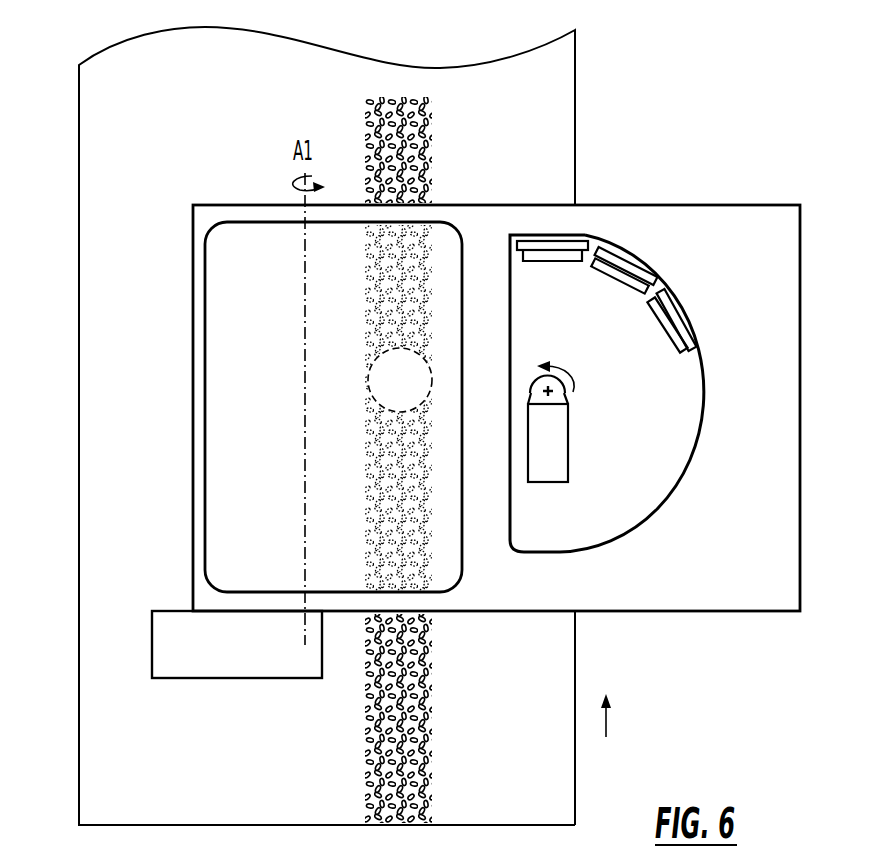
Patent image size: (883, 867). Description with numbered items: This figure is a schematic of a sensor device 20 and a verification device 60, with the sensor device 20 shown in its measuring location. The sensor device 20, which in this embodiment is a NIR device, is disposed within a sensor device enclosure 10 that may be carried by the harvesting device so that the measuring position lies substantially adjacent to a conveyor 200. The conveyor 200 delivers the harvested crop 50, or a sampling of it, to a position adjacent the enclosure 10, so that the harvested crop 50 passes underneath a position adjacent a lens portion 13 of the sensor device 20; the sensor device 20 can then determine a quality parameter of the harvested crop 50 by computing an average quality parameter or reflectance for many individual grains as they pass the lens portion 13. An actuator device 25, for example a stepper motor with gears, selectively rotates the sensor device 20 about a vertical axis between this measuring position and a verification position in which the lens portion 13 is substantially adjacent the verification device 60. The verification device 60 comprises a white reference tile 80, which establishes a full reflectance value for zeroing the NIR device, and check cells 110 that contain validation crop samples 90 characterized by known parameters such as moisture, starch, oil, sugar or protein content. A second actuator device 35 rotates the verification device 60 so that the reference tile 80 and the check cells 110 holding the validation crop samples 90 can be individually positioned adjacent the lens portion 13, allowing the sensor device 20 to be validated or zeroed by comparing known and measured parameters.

The sensor device enclosure 10 is at (770, 503).
The lens portion 13 is at (368, 380).
The sensor device 20 is at (242, 375).
The actuator device 25 is at (183, 637).
The second actuator device 35 is at (557, 458).
The harvested crop 50 is at (392, 820).
The verification device 60 is at (683, 385).
The white reference tile 80 is at (553, 243).
The validation crop sample 90 is at (633, 285).
The check cell 110 is at (613, 263).
The conveyor 200 is at (97, 778).